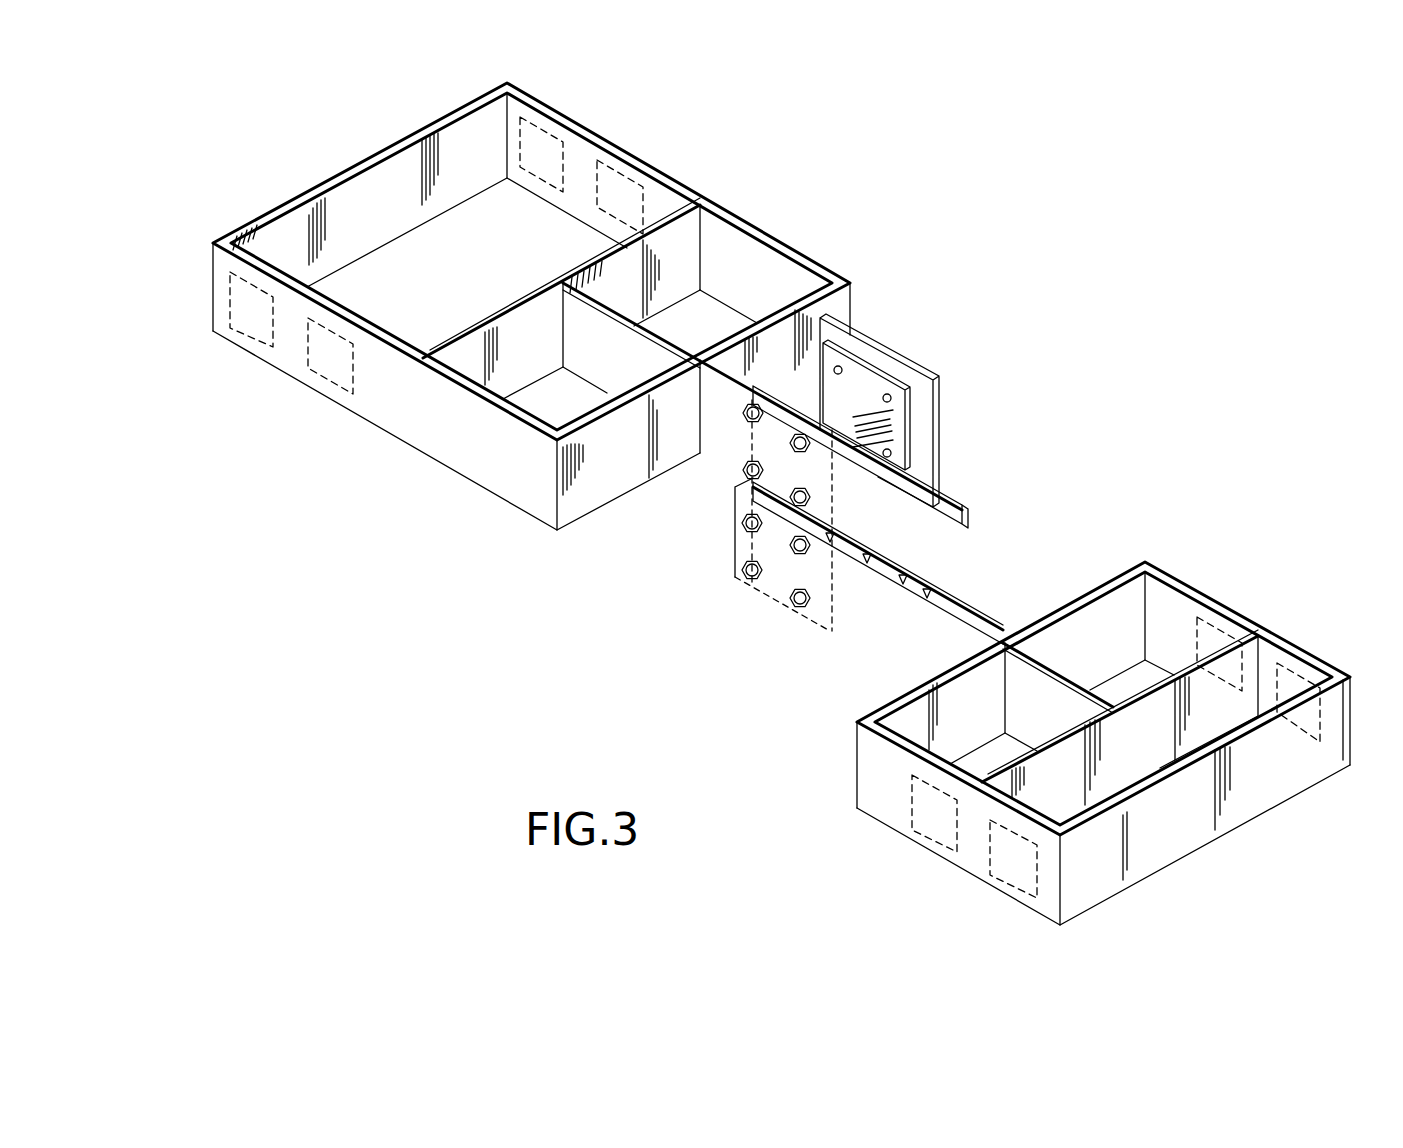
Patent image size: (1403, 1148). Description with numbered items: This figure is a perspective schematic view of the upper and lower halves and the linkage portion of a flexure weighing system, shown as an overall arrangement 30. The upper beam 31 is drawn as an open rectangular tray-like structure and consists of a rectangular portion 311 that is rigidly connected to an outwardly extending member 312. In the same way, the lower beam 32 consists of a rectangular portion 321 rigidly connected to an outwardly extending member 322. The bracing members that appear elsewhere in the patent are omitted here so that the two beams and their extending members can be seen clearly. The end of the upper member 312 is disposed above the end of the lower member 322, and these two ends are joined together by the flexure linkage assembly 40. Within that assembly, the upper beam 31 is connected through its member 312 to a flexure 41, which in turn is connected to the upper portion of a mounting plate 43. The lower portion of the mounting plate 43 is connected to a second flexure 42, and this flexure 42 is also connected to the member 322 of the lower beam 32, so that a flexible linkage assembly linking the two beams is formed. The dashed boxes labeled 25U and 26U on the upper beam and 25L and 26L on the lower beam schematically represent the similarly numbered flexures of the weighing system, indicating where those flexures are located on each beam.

The container assembly 30 is at (1086, 285).
The upper beam 31 is at (462, 490).
The rectangular portion 311 is at (733, 213).
The outwardly extending member 312 is at (962, 515).
The lower beam 32 is at (846, 770).
The rectangular portion 321 is at (1167, 575).
The outwardly extending member 322 is at (970, 620).
The flexure linkage assembly 40 is at (914, 342).
The flexure 41 is at (858, 359).
The second flexure 42 is at (742, 540).
The mounting plate 43 is at (935, 433).
The flexure 25U is at (637, 180).
The flexure 26U is at (553, 133).
The flexure 25L is at (1227, 627).
The flexure 26L is at (1300, 675).